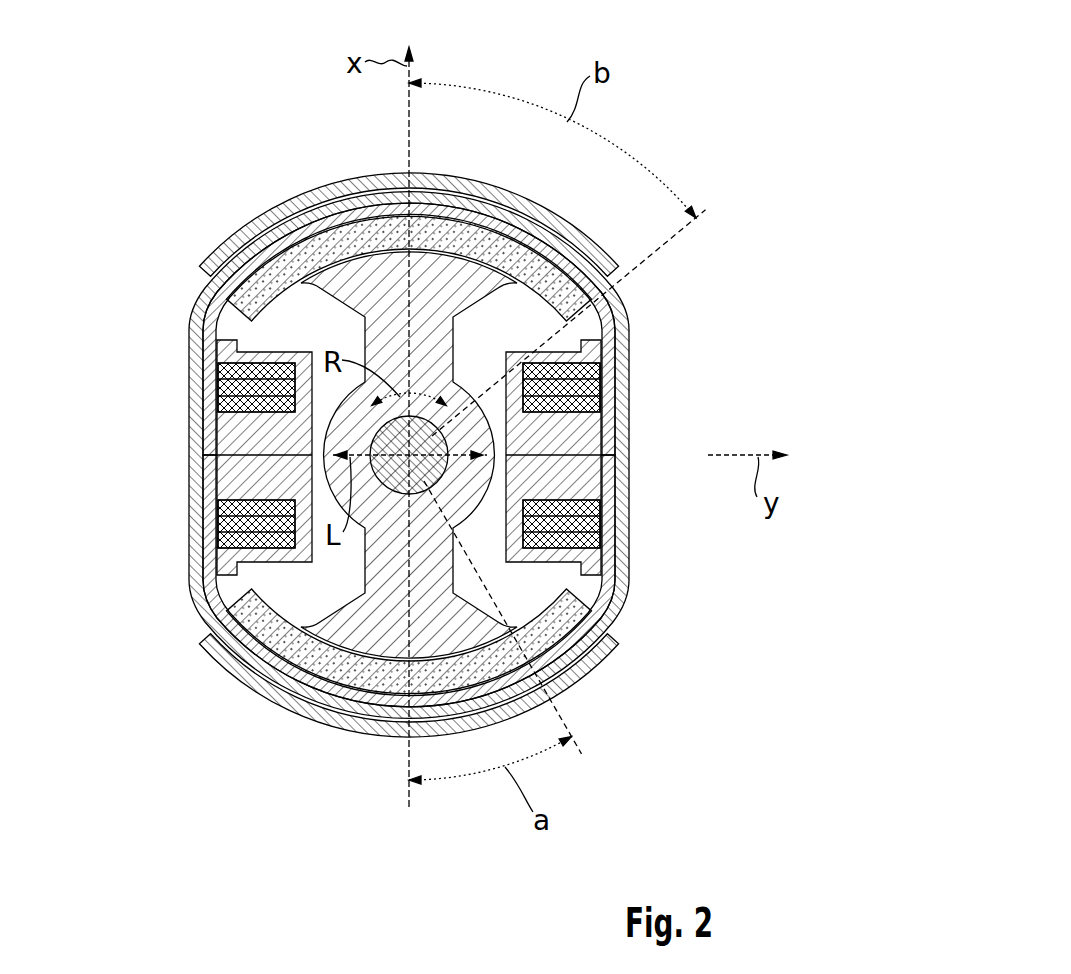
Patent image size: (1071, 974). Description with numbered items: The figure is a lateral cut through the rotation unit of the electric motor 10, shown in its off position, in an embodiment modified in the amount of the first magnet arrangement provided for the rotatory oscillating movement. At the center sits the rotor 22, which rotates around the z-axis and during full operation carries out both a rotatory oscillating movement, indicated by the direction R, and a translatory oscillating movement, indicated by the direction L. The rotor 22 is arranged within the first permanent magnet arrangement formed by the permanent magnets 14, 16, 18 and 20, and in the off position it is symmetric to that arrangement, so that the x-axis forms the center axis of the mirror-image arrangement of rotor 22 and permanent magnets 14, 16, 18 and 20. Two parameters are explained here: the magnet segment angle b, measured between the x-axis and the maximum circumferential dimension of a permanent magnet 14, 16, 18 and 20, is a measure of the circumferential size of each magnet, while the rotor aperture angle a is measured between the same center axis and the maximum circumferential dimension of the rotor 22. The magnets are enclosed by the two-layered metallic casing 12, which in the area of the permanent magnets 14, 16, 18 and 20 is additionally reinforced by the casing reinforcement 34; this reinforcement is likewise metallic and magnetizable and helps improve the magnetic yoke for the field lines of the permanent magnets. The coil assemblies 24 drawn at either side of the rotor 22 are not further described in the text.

The electric motor 10 is at (758, 232).
The two-layered metallic casing 12 is at (629, 337).
The permanent magnet 14 is at (545, 245).
The permanent magnet 16 is at (305, 225).
The permanent magnet 18 is at (588, 645).
The permanent magnet 20 is at (300, 662).
The rotor 22 is at (387, 568).
The coil 24 is at (214, 388).
The casing reinforcement 34 is at (218, 248).